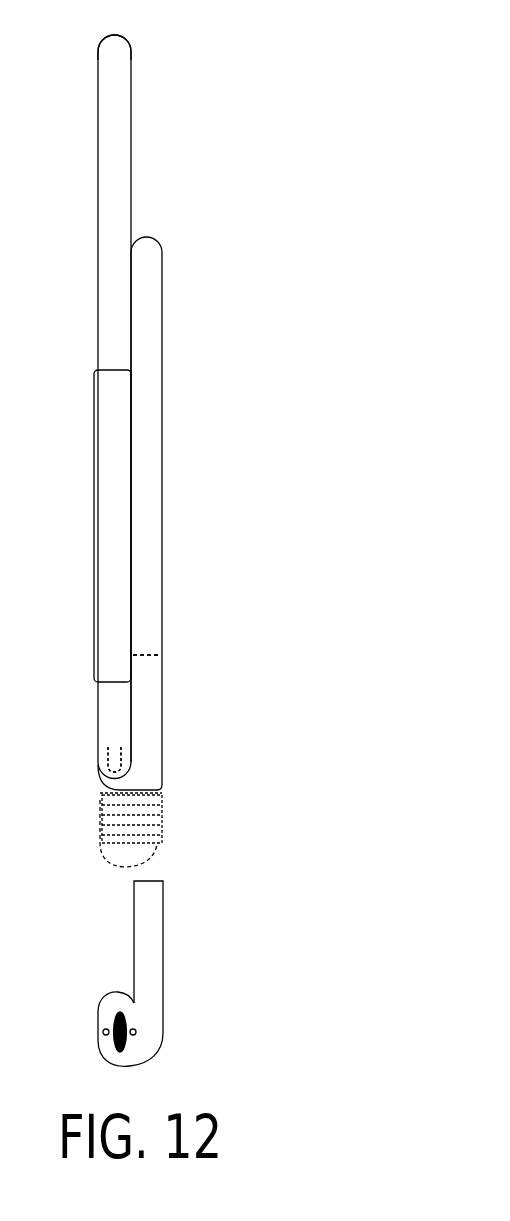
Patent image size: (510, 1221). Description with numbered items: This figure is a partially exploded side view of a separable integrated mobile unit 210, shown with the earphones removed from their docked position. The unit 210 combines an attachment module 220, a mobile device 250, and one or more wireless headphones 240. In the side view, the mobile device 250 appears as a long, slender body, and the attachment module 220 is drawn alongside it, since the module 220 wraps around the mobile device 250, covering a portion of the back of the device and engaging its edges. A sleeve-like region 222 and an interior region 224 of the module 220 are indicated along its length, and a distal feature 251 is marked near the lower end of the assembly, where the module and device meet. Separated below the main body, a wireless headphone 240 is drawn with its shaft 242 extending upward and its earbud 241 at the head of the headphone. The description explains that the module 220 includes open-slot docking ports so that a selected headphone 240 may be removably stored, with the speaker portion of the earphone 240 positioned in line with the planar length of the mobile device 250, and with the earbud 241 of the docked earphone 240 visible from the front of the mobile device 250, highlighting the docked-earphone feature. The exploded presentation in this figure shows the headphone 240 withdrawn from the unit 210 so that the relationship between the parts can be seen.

The separable integrated mobile unit 210 is at (149, 58).
The mobile device 250 is at (115, 133).
The attachment module 220 is at (148, 297).
The lumen of outer tube 224 is at (140, 372).
The sleeve 222 is at (110, 428).
The distal opening of inner tube 251 is at (118, 750).
The shaft of paddle 242 is at (146, 918).
The wireless headphone 240 is at (157, 1051).
The earbud 241 is at (118, 1056).